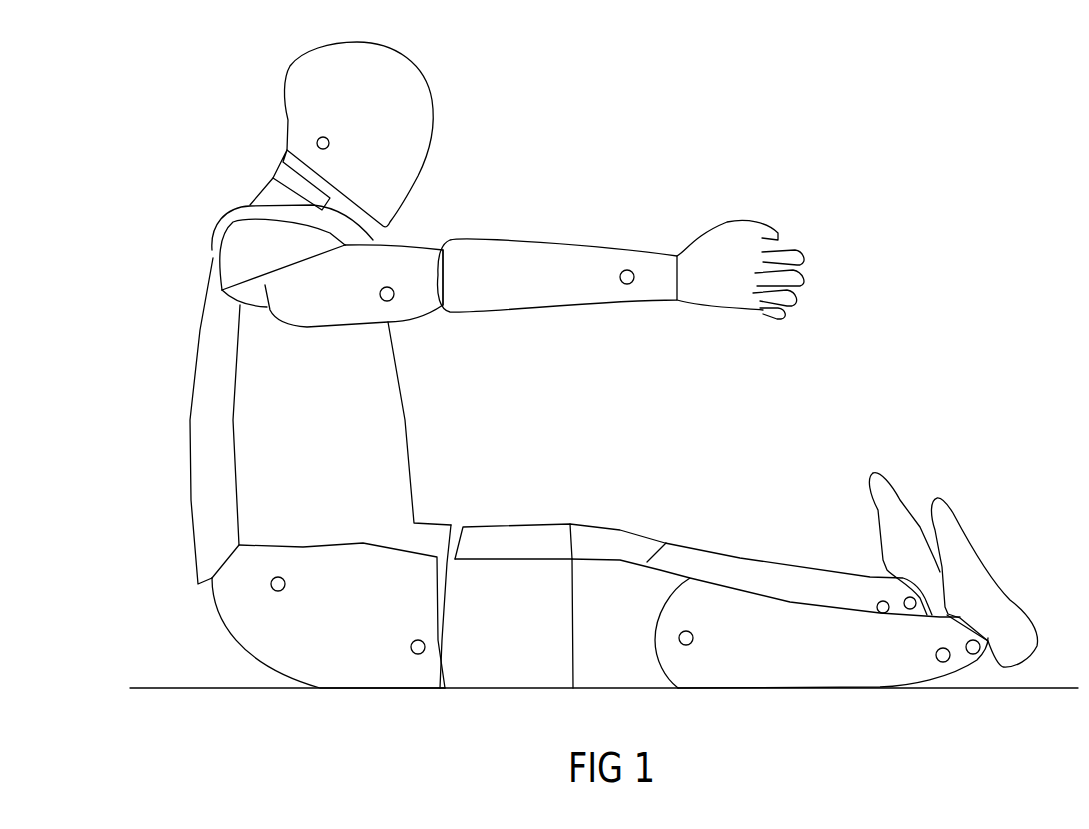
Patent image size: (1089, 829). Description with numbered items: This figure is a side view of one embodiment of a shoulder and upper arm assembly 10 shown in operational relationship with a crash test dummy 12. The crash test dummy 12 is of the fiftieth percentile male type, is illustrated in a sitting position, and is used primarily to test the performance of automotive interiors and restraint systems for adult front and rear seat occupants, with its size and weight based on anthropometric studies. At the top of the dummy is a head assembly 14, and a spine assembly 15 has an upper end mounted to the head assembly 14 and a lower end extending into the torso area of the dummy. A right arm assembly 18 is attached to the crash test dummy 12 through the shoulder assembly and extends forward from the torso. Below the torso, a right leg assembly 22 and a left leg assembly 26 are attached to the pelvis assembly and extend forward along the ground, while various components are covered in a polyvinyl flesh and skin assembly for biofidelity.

The shoulder and upper arm assembly 10 is at (604, 383).
The crash test dummy 12 is at (345, 120).
The head assembly 14 is at (418, 70).
The spine assembly 15 is at (283, 168).
The right arm assembly 18 is at (413, 243).
The right leg assembly 22 is at (785, 612).
The left leg assembly 26 is at (750, 573).